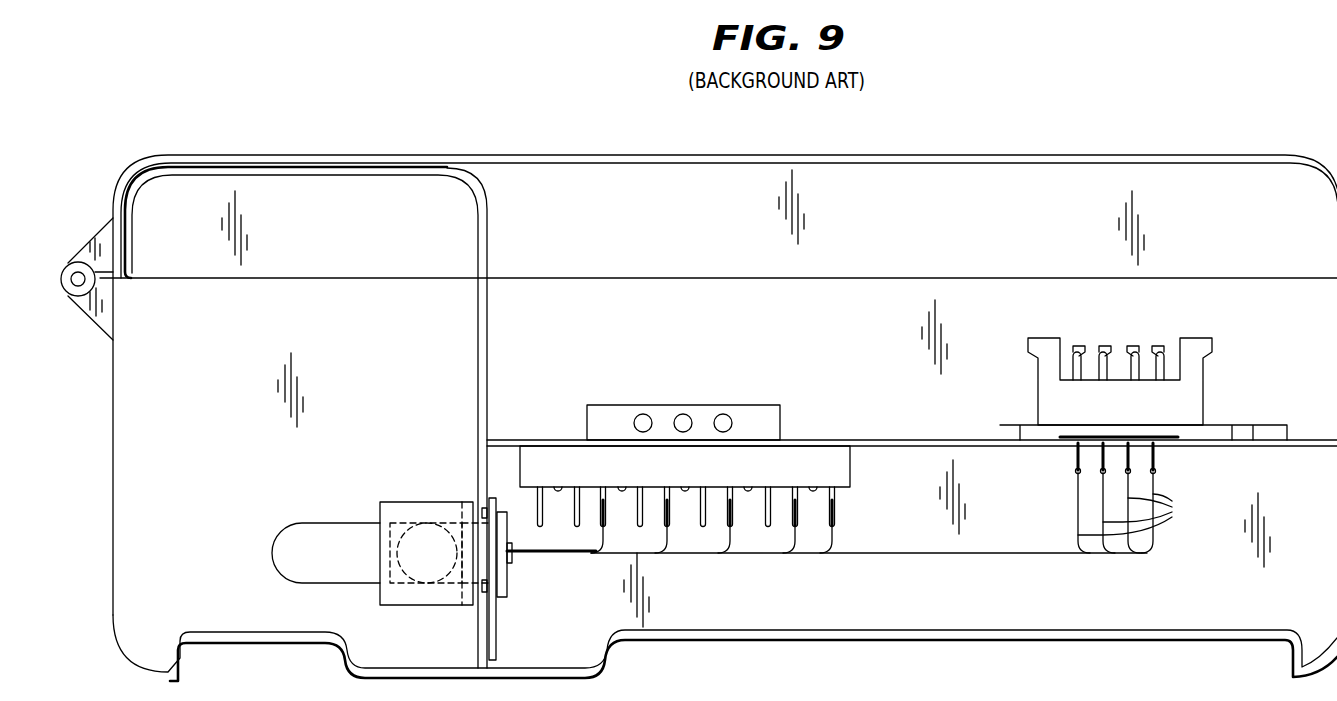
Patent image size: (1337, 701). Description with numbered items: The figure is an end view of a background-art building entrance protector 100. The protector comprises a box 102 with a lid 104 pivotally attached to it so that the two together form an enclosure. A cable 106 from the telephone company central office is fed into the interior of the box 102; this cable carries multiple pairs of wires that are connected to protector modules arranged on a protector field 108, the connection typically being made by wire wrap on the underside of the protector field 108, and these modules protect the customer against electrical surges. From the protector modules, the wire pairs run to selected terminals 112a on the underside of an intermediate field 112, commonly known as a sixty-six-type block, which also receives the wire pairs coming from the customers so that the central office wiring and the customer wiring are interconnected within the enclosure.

The building entrance protector 100 is at (448, 112).
The box 102 is at (113, 513).
The lid 104 is at (690, 154).
The cable 106 is at (310, 537).
The protector field 108 is at (758, 402).
The intermediate field 112 is at (1137, 416).
The terminals 112a is at (1150, 513).